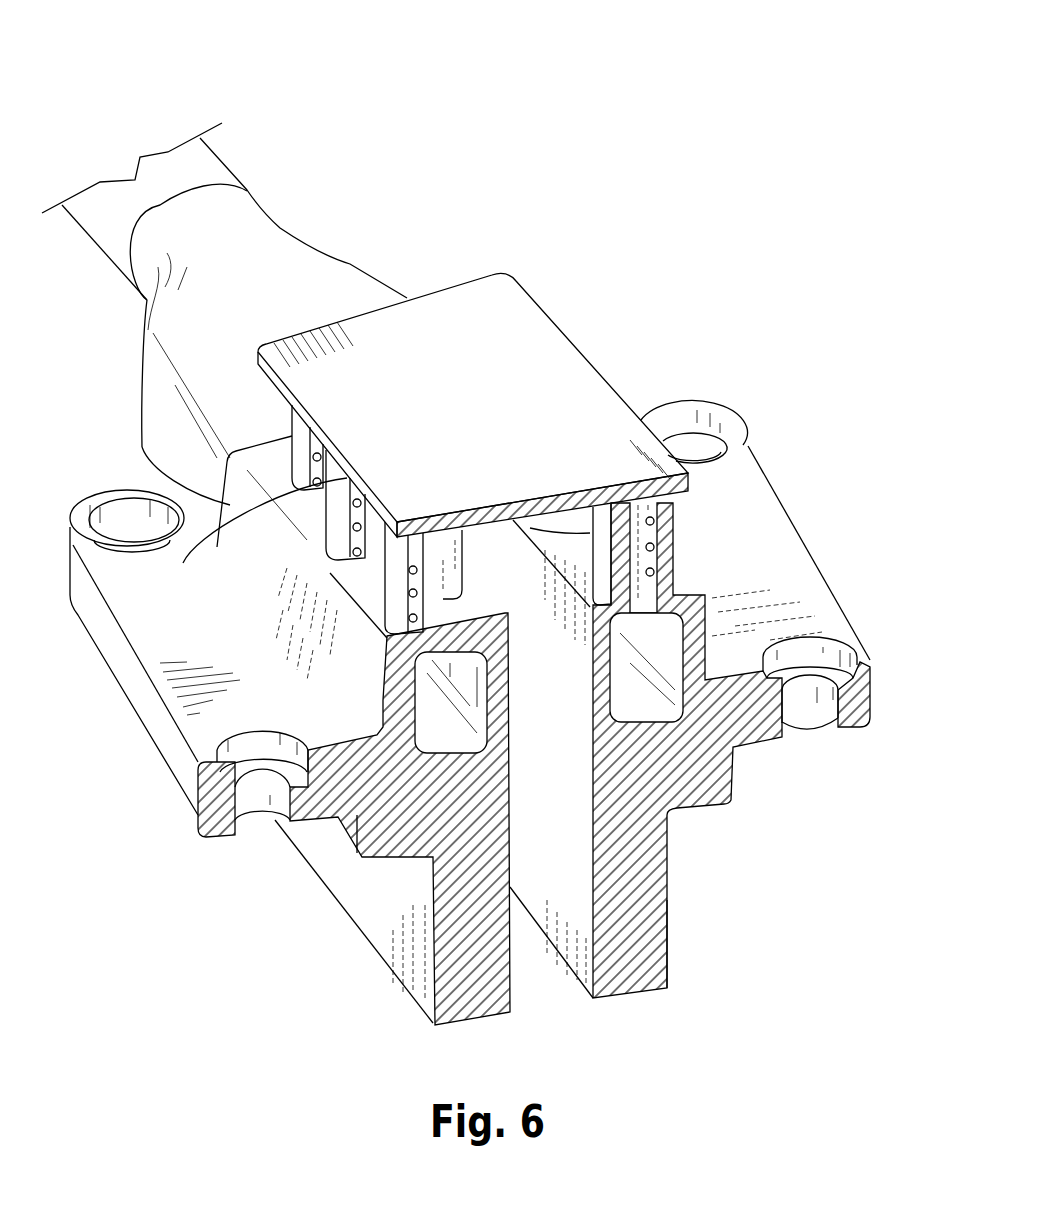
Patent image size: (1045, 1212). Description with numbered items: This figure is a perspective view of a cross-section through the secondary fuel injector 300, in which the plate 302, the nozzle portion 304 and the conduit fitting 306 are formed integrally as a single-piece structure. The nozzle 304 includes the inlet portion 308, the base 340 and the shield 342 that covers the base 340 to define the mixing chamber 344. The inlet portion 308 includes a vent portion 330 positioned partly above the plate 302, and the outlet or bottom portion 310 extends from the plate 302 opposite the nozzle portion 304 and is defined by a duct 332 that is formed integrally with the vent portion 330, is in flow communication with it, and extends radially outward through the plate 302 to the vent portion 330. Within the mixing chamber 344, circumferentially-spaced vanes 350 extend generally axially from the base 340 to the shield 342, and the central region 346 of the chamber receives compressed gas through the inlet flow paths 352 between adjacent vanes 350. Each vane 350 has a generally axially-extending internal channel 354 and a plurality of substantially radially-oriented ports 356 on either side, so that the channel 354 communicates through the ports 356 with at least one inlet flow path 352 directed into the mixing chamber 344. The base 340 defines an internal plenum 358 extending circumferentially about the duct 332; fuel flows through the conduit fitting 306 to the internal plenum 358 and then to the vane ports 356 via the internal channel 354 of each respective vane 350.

The secondary fuel injector 300 is at (84, 124).
The plate 302 is at (896, 688).
The nozzle portion 304 is at (715, 468).
The conduit fitting 306 is at (297, 204).
The inlet portion 308 is at (612, 326).
The bottom portion 310 is at (700, 946).
The vent portion 330 is at (213, 409).
The duct 332 is at (552, 826).
The base 340 is at (142, 450).
The shield 342 is at (457, 327).
The mixing chamber 344 is at (568, 710).
The central region 346 is at (517, 584).
The vane 350 is at (383, 537).
The inlet flow path 352 is at (456, 604).
The internal channel 354 is at (628, 602).
The port 356 is at (363, 530).
The internal plenum 358 is at (439, 741).